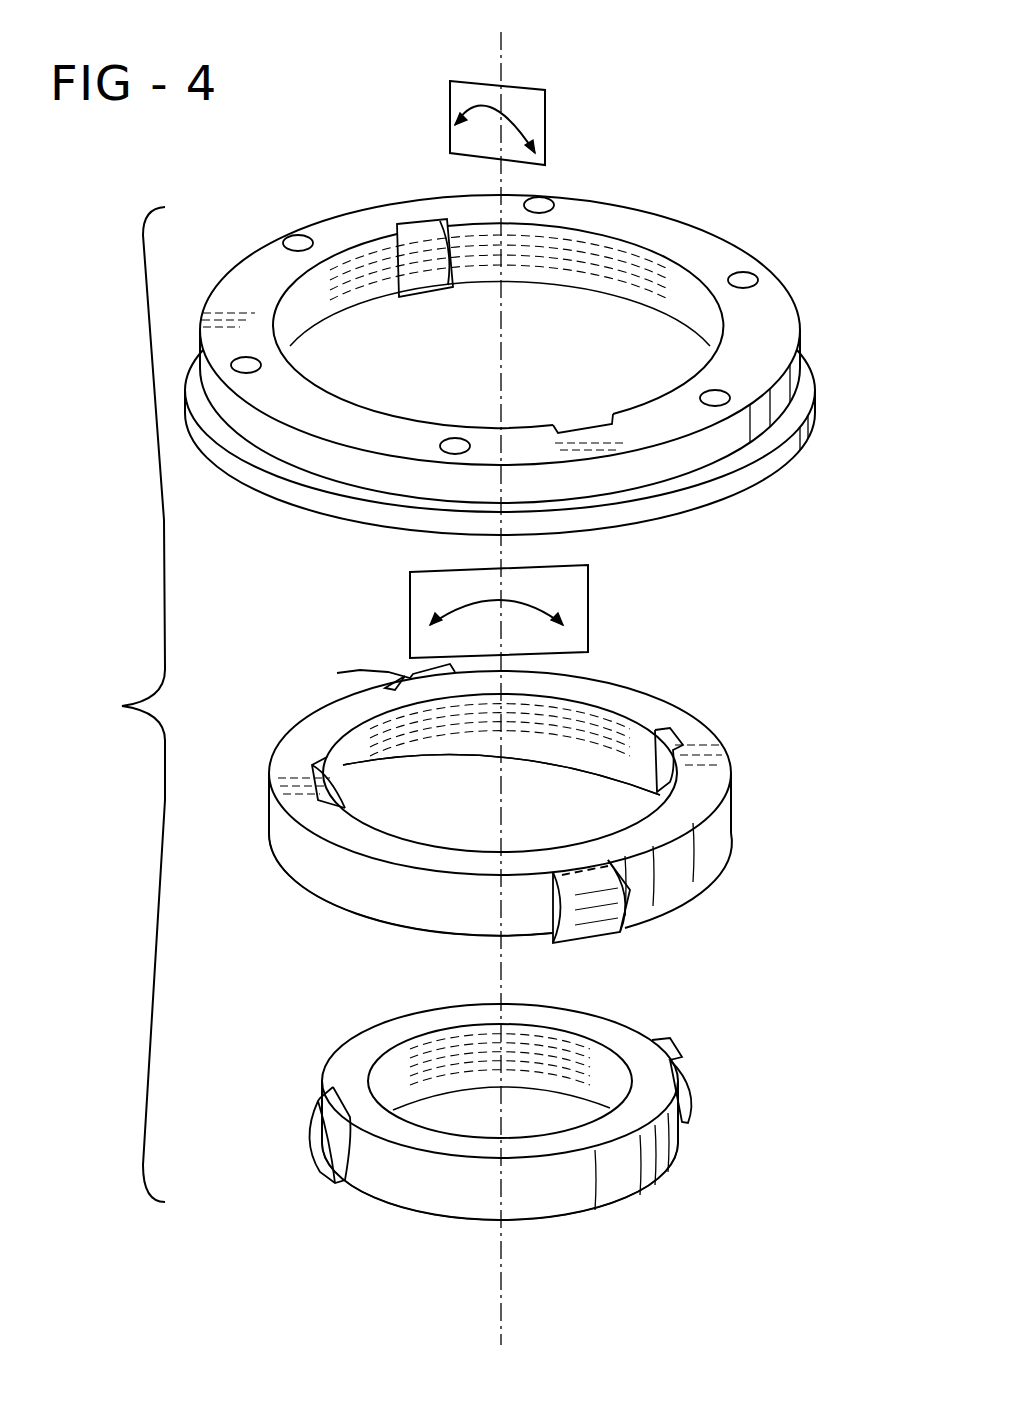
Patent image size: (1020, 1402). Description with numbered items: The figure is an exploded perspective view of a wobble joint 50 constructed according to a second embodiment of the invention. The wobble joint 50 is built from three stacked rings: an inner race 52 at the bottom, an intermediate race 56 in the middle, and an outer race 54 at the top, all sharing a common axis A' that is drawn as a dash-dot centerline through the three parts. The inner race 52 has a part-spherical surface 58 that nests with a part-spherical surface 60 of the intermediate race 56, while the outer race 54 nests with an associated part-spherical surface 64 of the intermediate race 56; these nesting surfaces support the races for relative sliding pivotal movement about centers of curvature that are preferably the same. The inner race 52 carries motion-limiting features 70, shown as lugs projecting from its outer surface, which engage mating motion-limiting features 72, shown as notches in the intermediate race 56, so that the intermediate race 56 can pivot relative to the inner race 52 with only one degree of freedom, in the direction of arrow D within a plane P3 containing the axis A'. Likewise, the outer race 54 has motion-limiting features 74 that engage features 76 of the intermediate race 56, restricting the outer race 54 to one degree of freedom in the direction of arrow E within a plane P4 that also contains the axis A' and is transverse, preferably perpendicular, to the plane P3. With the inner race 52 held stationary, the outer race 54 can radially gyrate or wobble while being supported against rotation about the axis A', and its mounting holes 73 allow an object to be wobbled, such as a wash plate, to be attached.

The wobble joint 50 is at (119, 704).
The inner race 52 is at (658, 1206).
The outer race 54 is at (812, 452).
The intermediate race 56 is at (740, 895).
The part-spherical surface 58 is at (463, 1197).
The part-spherical surface 60 is at (343, 760).
The part-spherical surface 64 is at (317, 877).
The motion-limiting features 70 is at (307, 1132).
The motion-limiting features 72 is at (323, 797).
The mounting holes 73 is at (297, 245).
The motion-limiting features 74 is at (413, 250).
The motion-limiting features 76 is at (393, 676).
The axis A is at (498, 52).
The plane P4 is at (530, 88).
The plane P3 is at (578, 638).
The arrow E is at (525, 117).
The arrow D is at (440, 605).